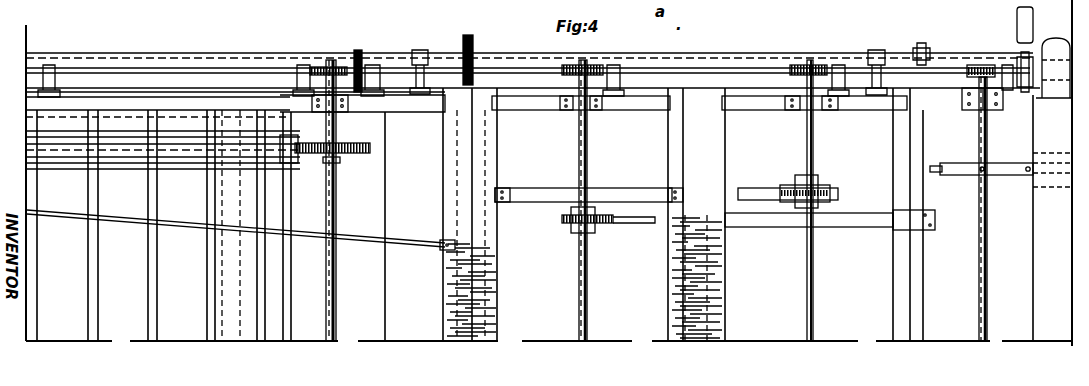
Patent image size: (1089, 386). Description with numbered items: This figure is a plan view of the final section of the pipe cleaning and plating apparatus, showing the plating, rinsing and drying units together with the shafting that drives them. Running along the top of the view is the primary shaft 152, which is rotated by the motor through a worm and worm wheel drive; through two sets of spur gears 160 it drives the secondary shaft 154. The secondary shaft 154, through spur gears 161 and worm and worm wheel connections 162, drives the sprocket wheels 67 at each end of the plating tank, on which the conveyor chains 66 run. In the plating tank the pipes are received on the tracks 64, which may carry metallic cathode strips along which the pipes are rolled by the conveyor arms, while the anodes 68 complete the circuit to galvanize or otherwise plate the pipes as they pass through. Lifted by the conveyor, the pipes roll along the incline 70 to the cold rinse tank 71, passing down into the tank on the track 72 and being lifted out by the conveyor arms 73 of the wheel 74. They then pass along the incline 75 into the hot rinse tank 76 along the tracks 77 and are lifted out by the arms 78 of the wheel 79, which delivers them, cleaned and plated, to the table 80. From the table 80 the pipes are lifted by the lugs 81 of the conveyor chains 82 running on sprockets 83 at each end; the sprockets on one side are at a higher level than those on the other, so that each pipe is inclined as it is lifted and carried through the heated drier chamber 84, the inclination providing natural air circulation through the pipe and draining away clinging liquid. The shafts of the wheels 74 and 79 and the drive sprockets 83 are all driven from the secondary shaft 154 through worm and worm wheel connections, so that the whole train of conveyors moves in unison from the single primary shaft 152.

The primary shaft 152 is at (220, 56).
The secondary shaft 154 is at (153, 72).
The spur gears 160 is at (470, 36).
The spur gears 161 is at (361, 52).
The worm and worm wheel connections 162 is at (327, 66).
The tracks 64 is at (71, 218).
The conveyor chains 66 is at (131, 152).
The sprocket wheels 67 is at (372, 148).
The anodes 68 is at (130, 328).
The incline 70 is at (486, 293).
The cold rinse tank 71 is at (641, 102).
The track 72 is at (538, 189).
The conveyor arms 73 is at (647, 223).
The wheel 74 is at (584, 222).
The incline 75 is at (716, 275).
The hot rinse tank 76 is at (873, 103).
The tracks 77 is at (873, 223).
The arms 78 is at (762, 192).
The wheel 79 is at (816, 189).
The table 80 is at (913, 219).
The lugs 81 is at (938, 166).
The conveyor chains 82 is at (1012, 177).
The sprockets 83 is at (1022, 176).
The drier chamber 84 is at (1045, 269).